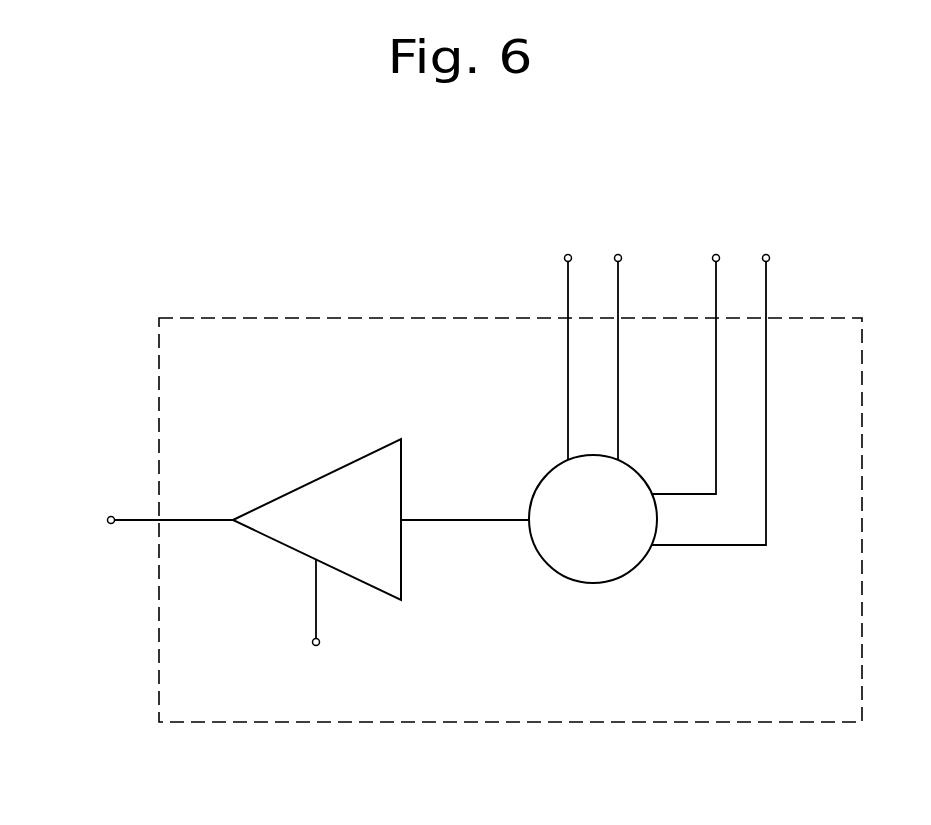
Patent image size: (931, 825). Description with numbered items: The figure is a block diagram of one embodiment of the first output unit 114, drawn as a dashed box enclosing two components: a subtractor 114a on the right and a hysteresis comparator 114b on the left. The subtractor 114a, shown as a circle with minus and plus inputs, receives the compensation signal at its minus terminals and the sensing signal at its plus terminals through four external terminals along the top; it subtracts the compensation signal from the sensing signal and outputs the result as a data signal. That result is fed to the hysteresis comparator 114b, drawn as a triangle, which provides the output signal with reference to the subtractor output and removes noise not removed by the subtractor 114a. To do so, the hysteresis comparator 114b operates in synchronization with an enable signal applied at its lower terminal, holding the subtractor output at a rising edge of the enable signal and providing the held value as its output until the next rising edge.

The first output unit 114 is at (372, 318).
The subtractor 114a is at (590, 584).
The hysteresis comparator 114b is at (317, 479).